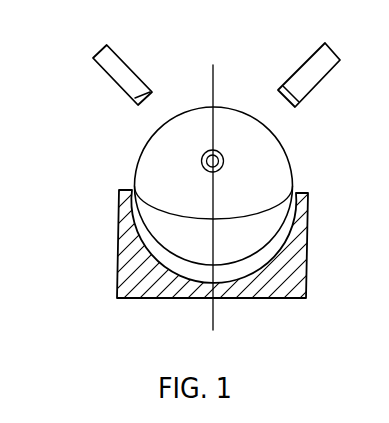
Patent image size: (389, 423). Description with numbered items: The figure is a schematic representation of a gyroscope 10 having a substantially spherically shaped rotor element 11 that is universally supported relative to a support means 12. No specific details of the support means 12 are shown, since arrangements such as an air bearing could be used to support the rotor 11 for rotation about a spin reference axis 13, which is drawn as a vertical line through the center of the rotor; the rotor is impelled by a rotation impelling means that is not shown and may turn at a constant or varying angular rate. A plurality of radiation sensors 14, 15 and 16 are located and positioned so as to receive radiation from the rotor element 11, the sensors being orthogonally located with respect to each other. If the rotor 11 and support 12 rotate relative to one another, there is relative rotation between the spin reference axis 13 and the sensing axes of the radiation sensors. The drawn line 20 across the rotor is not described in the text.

The gyroscope 10 is at (85, 158).
The rotor element 11 is at (292, 158).
The support means 12 is at (308, 230).
The spin reference axis 13 is at (213, 73).
The radiation sensor 14 is at (330, 77).
The radiation sensor 15 is at (137, 63).
The radiation sensor 16 is at (224, 160).
The equatorial line 20 is at (248, 213).